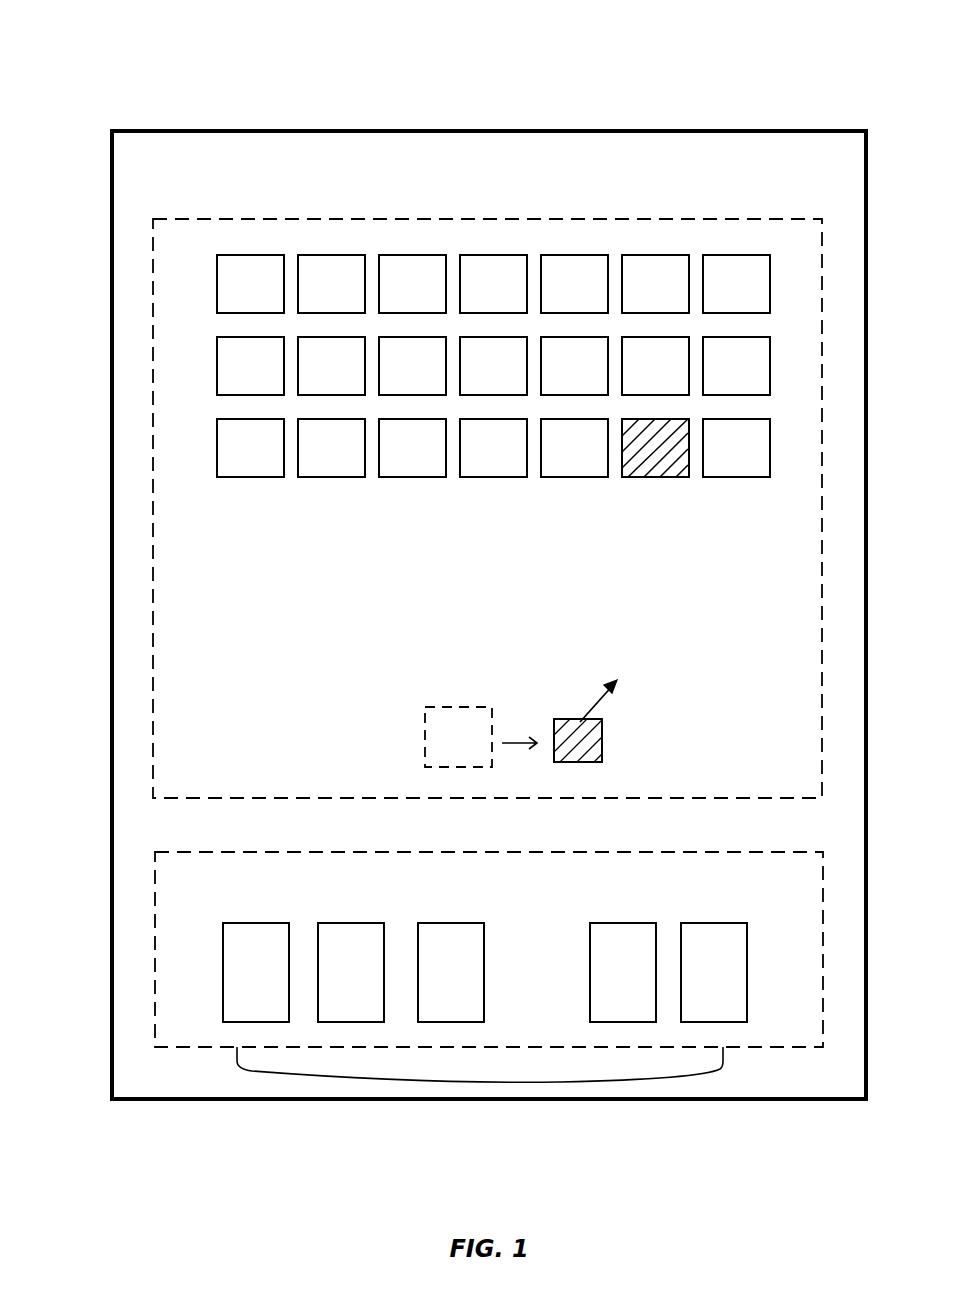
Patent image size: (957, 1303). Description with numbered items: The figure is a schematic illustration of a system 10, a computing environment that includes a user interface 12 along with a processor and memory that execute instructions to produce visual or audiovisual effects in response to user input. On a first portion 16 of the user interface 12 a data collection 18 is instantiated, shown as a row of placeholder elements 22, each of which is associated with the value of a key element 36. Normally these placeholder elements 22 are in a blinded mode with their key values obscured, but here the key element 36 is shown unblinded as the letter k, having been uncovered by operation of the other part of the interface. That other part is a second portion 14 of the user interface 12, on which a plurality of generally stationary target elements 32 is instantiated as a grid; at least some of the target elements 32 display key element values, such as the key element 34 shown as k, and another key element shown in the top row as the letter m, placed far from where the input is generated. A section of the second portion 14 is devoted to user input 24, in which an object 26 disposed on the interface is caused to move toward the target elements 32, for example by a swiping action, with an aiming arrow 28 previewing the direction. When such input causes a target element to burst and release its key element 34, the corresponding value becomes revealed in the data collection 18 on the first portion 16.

The system 10 is at (146, 56).
The user interface 12 is at (362, 129).
The second portion of the user interface 14 is at (352, 218).
The first portion of the user interface 16 is at (287, 851).
The data collection 18 is at (561, 1082).
The placeholder elements 22 is at (425, 922).
The user input 24 is at (425, 728).
The object 26 is at (603, 743).
The aiming arrow 28 is at (594, 717).
The target elements 32 is at (655, 253).
The key element 34 is at (412, 480).
The key element 36 is at (455, 950).